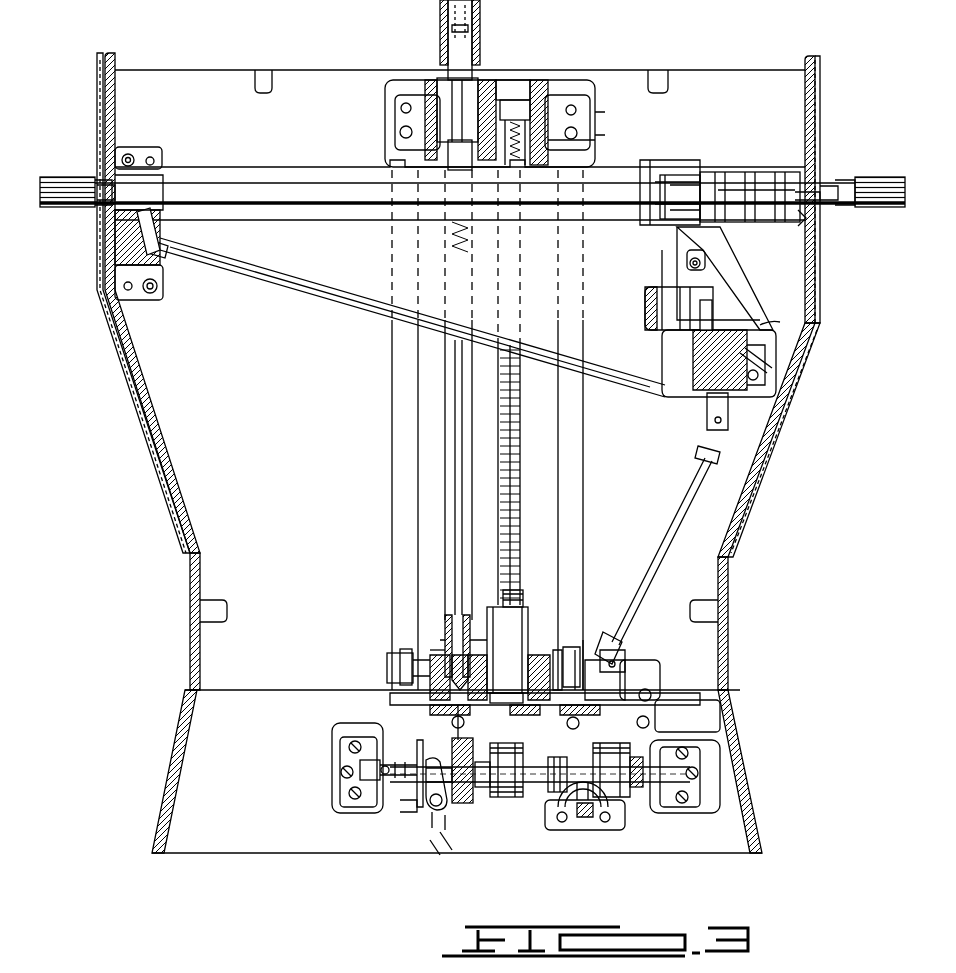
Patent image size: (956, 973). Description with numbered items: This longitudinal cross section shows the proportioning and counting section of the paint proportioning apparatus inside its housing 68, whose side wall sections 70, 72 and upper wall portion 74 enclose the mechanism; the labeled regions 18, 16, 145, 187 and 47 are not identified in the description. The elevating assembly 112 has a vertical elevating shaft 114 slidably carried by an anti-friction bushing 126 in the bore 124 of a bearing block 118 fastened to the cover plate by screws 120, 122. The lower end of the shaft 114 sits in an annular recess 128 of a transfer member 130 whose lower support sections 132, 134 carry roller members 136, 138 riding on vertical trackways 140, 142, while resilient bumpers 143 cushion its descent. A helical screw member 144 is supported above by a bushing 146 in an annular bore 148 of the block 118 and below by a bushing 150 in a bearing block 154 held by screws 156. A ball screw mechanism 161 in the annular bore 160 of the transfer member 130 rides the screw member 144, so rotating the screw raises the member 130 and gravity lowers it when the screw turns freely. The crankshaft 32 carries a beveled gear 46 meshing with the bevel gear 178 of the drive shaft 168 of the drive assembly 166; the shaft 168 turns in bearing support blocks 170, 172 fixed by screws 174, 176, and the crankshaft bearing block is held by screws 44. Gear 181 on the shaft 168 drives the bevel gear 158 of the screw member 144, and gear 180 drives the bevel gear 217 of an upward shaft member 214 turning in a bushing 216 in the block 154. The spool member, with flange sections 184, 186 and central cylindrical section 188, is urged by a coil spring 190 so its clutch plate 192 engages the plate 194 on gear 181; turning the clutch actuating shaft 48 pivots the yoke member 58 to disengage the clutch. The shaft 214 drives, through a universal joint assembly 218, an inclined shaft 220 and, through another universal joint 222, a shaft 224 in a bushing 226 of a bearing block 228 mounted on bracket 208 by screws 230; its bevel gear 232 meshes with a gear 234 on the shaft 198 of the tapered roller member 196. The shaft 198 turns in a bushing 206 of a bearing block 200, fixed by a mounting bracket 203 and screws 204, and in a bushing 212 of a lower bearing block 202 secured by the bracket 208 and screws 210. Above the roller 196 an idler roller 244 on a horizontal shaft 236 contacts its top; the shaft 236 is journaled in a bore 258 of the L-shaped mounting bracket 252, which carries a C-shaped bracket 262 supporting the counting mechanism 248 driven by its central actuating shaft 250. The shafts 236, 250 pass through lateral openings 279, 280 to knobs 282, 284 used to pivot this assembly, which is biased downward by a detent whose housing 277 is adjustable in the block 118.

The side wall section 70 is at (822, 258).
The housing 68 is at (800, 400).
The side wall section 72 is at (120, 372).
The upper wall portion 74 is at (302, 68).
The left base 18 is at (167, 777).
The right base 16 is at (752, 745).
The mounting bracket 252 is at (277, 164).
The shaft 236 is at (326, 208).
The knob 282 is at (55, 208).
The knob 284 is at (875, 190).
The lateral opening 280 is at (824, 194).
The lateral opening 279 is at (100, 182).
The external housing 277 is at (458, 236).
The constituent counting mechanism 248 is at (750, 166).
The central actuating shaft 250 is at (700, 188).
The support bracket 262 is at (808, 218).
The central bore 258 is at (145, 180).
The idler roller 244 is at (668, 224).
The elevating assembly 112 is at (382, 450).
The bearing block 118 is at (580, 93).
The screws 122 is at (400, 108).
The bore 124 is at (440, 147).
The screws 120 is at (590, 133).
The elevating shaft 114 is at (446, 64).
The anti-friction bushing means 126 is at (450, 98).
The annular bore 148 is at (532, 86).
The bushing member 146 is at (588, 150).
The trackway 142 is at (390, 411).
The trackway 140 is at (583, 458).
The helical screw member 144 is at (525, 416).
The ball screw mechanism 161 is at (484, 612).
The annular bore 160 is at (538, 640).
The tapered roller member 196 is at (300, 300).
The shaft 198 is at (172, 242).
The bushing 206 is at (125, 263).
The mounting bracket 203 is at (117, 284).
The bearing block 200 is at (145, 303).
The screws 204 is at (132, 157).
The bearing block 202 is at (712, 287).
The screws 210 is at (695, 255).
The anti-friction bearing means 212 is at (665, 360).
The mounting bracket 208 is at (722, 302).
The shaft 224 is at (790, 356).
The bearing block 228 is at (790, 368).
The screws 230 is at (778, 402).
The bearing means 226 is at (742, 420).
The bevel gear member 232 is at (800, 330).
The gear member 234 is at (800, 310).
The universal joint assembly 222 is at (705, 450).
The inclined shaft 220 is at (680, 496).
The universal joint assembly 218 is at (650, 625).
The shaft member 214 is at (628, 645).
The annular recess 128 is at (428, 676).
The lower support section 134 is at (398, 660).
The roller member 138 is at (440, 652).
The transfer member 130 is at (435, 645).
The hub 145 is at (493, 668).
The bushing 150 is at (548, 665).
The resilient bumpers 143 is at (560, 650).
The roller member 136 is at (590, 690).
The lower support section 132 is at (600, 690).
The bearing block 154 is at (650, 690).
The bushing 216 is at (652, 697).
The screws 156 is at (452, 724).
The clutch plate 192 is at (485, 724).
The bevel gear member 217 is at (604, 724).
The screws 174 is at (690, 746).
The bearing support block 172 is at (338, 778).
The screws 176 is at (347, 752).
The block 187 is at (400, 754).
The central cylindrical section 188 is at (429, 753).
The drive assembly 166 is at (418, 812).
The flange section 184 is at (425, 812).
The screws 44 is at (575, 778).
The beveled gear member 181 is at (462, 808).
The bevel gear member 158 is at (512, 786).
The drive shaft 168 is at (532, 862).
The bevel gear member 178 is at (553, 835).
The crankshaft 32 is at (582, 835).
The bevel gear 47 is at (632, 832).
The beveled gear member 46 is at (646, 830).
The bearing support block 170 is at (700, 806).
The beveled gear member 180 is at (645, 798).
The coil spring 190 is at (402, 815).
The yoke member 58 is at (432, 846).
The clutch actuating shaft 48 is at (446, 844).
The flange section 186 is at (434, 830).
The plate 194 is at (449, 832).